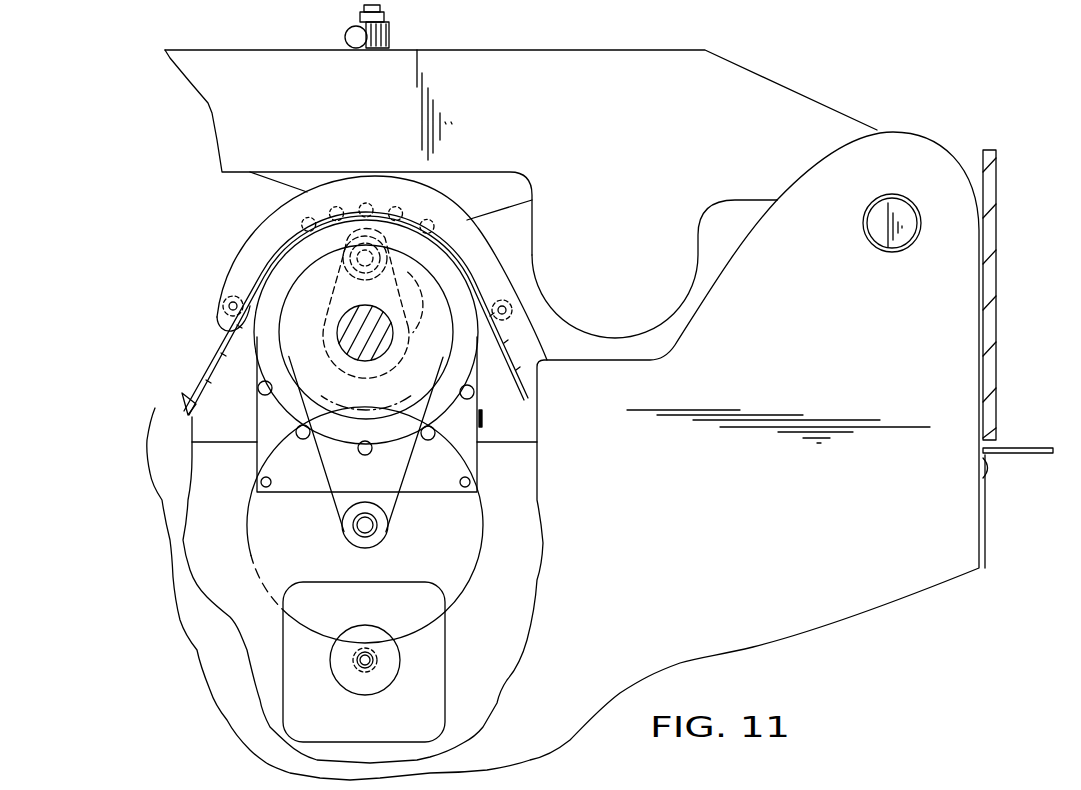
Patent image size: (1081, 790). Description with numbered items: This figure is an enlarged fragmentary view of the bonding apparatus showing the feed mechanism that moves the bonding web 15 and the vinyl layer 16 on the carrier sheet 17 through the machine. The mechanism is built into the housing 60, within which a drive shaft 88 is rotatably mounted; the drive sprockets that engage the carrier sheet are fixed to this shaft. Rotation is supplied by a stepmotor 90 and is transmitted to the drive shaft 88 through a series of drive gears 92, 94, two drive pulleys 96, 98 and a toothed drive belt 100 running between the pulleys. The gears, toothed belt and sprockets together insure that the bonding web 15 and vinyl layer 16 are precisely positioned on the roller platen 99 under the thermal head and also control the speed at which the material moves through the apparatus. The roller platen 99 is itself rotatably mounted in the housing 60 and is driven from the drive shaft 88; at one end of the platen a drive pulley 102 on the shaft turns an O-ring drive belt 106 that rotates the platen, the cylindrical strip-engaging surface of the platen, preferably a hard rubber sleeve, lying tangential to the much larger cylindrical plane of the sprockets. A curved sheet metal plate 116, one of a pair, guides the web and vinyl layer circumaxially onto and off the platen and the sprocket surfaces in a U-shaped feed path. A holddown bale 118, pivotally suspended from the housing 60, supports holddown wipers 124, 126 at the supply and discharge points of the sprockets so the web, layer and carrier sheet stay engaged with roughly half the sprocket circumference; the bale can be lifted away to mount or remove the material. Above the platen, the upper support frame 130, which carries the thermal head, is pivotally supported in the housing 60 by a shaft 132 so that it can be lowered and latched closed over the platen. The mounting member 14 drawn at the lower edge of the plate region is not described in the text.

The frame member 14 is at (503, 380).
The bonding web 15 is at (224, 402).
The vinyl layer 16 is at (183, 407).
The carrier sheet 17 is at (1027, 456).
The housing 60 is at (753, 624).
The drive shaft 88 is at (352, 328).
The stepmotor 90 is at (427, 694).
The drive gear 92 is at (357, 664).
The drive gear 94 is at (456, 603).
The drive pulley 96 is at (384, 536).
The drive pulley 98 is at (428, 290).
The roller platen 99 is at (368, 210).
The toothed drive belt 100 is at (410, 477).
The drive pulley 102 is at (346, 303).
The O-ring drive belt 106 is at (425, 309).
The curved sheet metal plate 116 is at (224, 426).
The holddown bale 118 is at (247, 250).
The holddown wiper 124 is at (512, 325).
The holddown wiper 126 is at (235, 338).
The upper support frame 130 is at (539, 62).
The shaft 132 is at (883, 218).